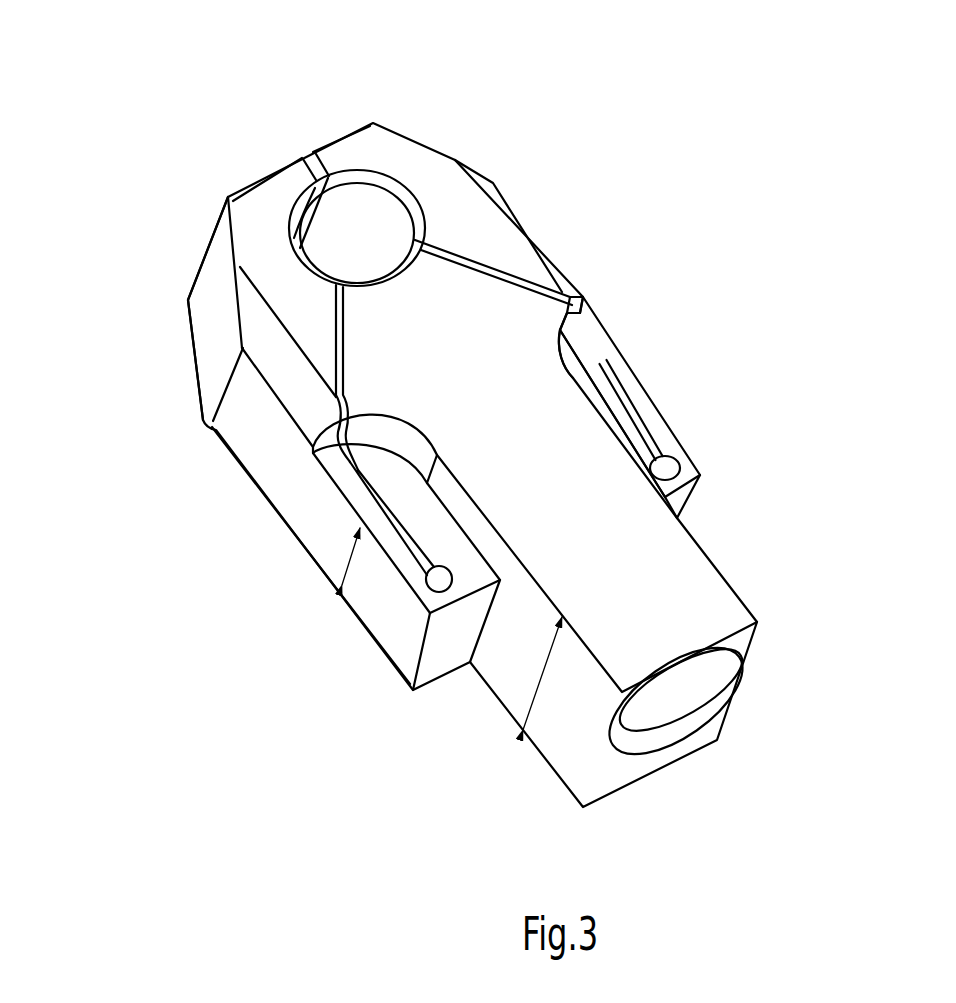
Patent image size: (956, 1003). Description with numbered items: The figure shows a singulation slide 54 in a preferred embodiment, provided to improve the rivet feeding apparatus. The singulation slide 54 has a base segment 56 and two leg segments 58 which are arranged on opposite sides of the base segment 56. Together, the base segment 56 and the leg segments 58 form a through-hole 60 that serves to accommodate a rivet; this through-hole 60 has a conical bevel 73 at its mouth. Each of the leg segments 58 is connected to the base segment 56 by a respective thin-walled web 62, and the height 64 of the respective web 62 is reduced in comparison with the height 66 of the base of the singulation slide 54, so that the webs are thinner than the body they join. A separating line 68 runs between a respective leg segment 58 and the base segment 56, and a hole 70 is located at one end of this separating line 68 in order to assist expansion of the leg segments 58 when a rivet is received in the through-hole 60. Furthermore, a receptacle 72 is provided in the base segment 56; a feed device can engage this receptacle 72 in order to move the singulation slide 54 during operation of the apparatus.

The singulation slide 54 is at (362, 755).
The base segment 56 is at (690, 618).
The leg segments 58 is at (475, 220).
The through-hole 60 is at (363, 223).
The thin-walled web 62 is at (637, 393).
The height of the web 64 is at (345, 573).
The height of the base 66 is at (530, 707).
The separating line 68 is at (600, 338).
The hole 70 is at (667, 468).
The receptacle 72 is at (693, 703).
The conical bevel 73 is at (332, 177).